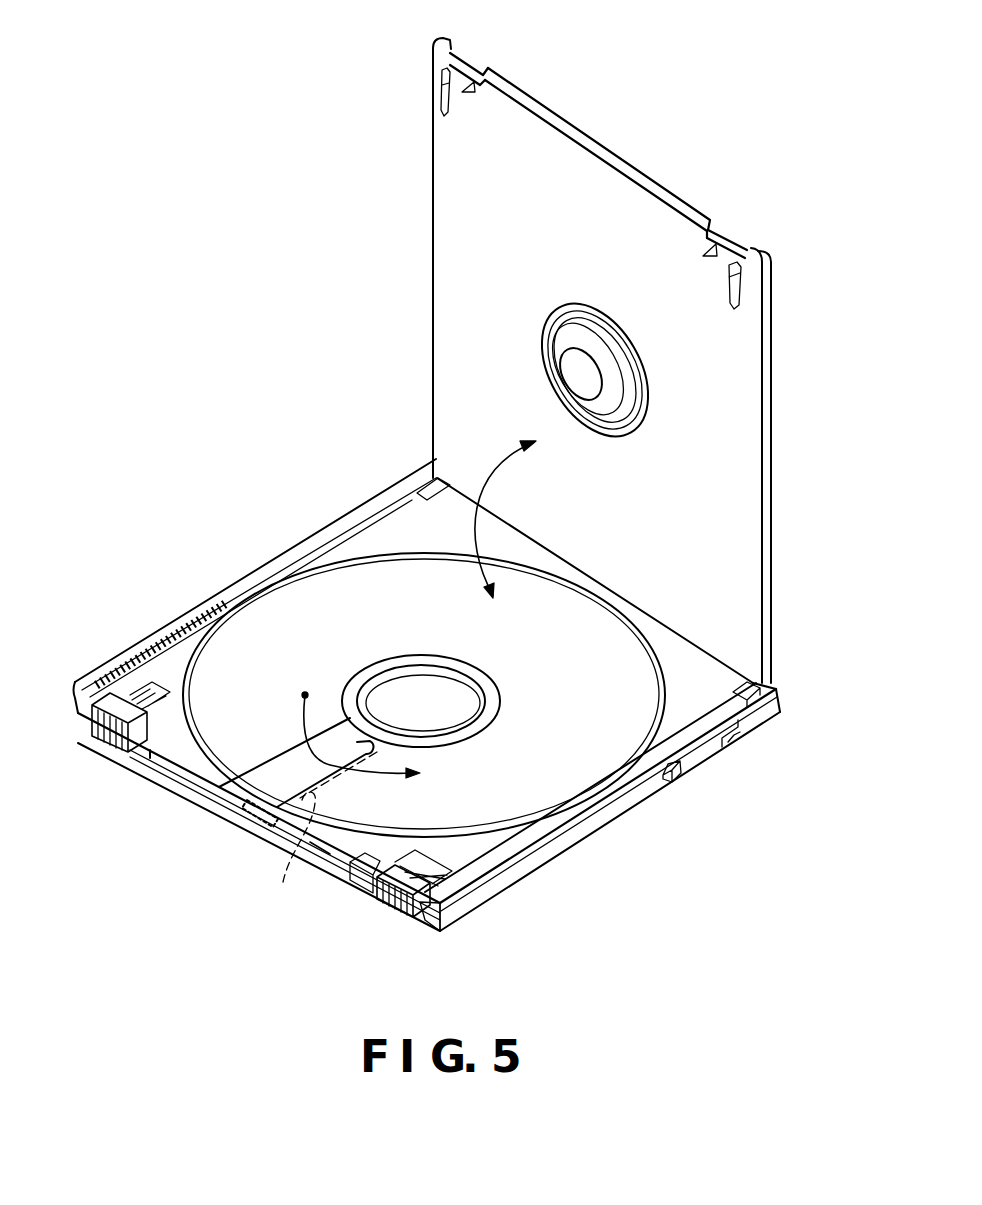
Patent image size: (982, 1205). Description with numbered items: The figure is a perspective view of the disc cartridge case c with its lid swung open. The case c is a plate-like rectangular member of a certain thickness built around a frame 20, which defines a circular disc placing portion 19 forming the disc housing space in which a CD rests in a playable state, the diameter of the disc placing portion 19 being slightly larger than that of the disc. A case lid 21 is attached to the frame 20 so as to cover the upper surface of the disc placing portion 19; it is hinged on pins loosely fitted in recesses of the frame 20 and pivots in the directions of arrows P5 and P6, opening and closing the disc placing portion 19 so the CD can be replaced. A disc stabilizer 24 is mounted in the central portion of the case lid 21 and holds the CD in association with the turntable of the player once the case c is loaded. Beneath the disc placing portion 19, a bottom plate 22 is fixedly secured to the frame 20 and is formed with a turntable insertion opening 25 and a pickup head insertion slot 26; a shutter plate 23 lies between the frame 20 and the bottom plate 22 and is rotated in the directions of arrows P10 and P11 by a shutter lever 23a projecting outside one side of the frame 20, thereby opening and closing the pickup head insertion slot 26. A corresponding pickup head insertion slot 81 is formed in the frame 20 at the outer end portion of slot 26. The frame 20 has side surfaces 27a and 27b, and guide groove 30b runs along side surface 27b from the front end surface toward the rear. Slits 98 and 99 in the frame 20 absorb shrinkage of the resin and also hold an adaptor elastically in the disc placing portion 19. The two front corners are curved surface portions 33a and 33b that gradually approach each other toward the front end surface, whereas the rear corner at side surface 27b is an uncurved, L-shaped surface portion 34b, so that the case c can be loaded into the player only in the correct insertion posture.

The disc cartridge case c is at (778, 262).
The case lid 21 is at (605, 140).
The disc stabilizer 24 is at (612, 400).
The frame 20 is at (717, 703).
The side surface 27a is at (231, 588).
The side surface 27b is at (483, 892).
The guide groove 30b is at (527, 867).
The shutter plate 23 is at (563, 785).
The shutter lever 23a is at (672, 786).
The uncurved surface portion 34b is at (779, 690).
The curved surface portion 33a is at (75, 712).
The curved surface portion 33b is at (430, 920).
The disc placing portion 19 is at (413, 563).
The turntable insertion opening 25 is at (388, 686).
The bottom plate 22 is at (263, 790).
The pickup head insertion slot 26 is at (313, 830).
The pickup head insertion slot 81 is at (270, 832).
The slit 98 is at (170, 772).
The slit 99 is at (317, 893).
The arrow direction P5 is at (523, 509).
The arrow direction P6 is at (500, 609).
The arrow direction P10 is at (348, 718).
The arrow direction P11 is at (439, 777).